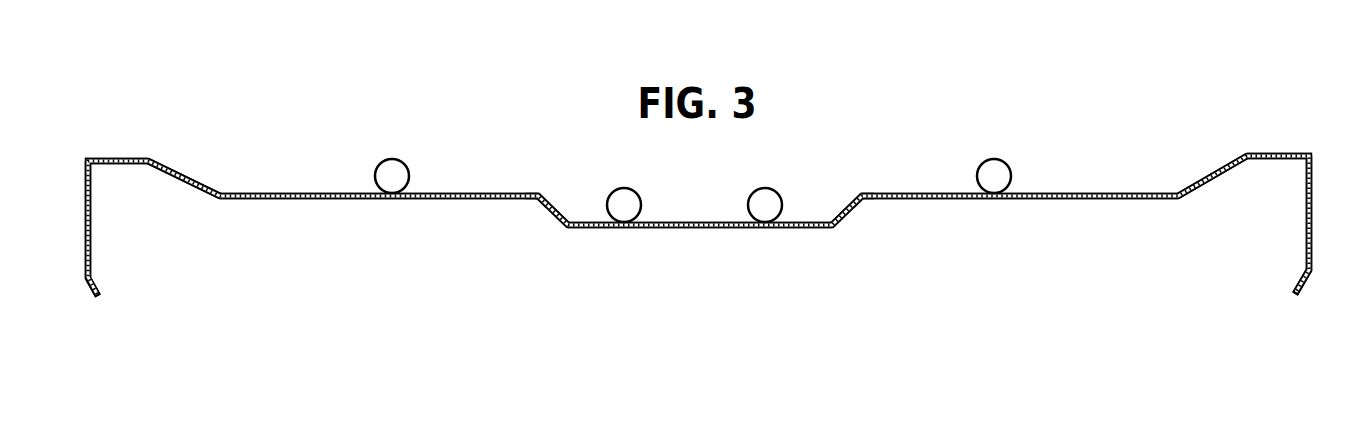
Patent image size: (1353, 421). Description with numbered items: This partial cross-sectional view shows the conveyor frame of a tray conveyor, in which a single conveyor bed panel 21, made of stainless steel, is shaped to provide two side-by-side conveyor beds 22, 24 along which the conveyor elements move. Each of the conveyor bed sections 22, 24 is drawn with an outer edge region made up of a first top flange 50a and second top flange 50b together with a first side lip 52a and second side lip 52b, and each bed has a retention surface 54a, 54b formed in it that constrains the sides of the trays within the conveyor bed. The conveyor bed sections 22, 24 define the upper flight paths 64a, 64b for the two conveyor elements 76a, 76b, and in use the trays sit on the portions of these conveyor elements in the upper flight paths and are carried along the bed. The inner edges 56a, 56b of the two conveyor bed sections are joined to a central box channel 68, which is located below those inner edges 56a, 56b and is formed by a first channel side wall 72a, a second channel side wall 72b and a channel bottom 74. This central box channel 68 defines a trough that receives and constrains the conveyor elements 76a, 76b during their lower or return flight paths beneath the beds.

The conveyor bed panel 21 is at (699, 189).
The conveyor bed 22 is at (291, 196).
The conveyor bed 24 is at (1087, 177).
The first top flange 50a is at (120, 158).
The second top flange 50b is at (1282, 152).
The first side lip 52a is at (86, 158).
The second side lip 52b is at (1304, 163).
The retention surface 54a is at (192, 172).
The retention surface 54b is at (1207, 170).
The inner edge 56a is at (540, 192).
The inner edge 56b is at (860, 192).
The upper flight path 64a is at (300, 193).
The upper flight path 64b is at (1150, 190).
The central box channel 68 is at (683, 205).
The first channel side wall 72a is at (555, 210).
The second channel side wall 72b is at (843, 207).
The channel bottom 74 is at (808, 229).
The conveyor element 76a is at (408, 168).
The conveyor element 76b is at (750, 197).